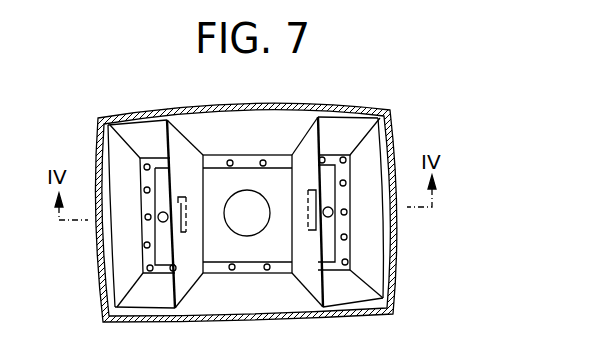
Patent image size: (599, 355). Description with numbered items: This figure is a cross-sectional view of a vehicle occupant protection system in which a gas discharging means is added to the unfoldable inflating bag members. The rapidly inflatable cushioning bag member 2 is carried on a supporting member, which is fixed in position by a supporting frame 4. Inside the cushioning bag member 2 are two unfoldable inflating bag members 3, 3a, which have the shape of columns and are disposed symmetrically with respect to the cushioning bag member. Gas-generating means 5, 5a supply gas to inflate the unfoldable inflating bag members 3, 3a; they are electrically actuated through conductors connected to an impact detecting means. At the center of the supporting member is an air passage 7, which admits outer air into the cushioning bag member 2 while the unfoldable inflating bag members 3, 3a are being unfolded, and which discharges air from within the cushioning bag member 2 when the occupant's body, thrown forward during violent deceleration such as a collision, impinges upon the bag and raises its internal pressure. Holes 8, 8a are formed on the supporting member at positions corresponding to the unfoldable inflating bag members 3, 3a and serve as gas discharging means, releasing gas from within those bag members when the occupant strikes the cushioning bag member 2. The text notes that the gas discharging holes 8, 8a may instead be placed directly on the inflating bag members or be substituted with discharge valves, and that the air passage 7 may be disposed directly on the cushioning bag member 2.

The rapidly inflatable cushioning bag member 2 is at (323, 100).
The unfoldable inflating bag member 3 is at (373, 255).
The unfoldable inflating bag member 3a is at (123, 259).
The supporting frame 4 is at (248, 160).
The gas-generating means 5 is at (333, 215).
The gas-generating means 5a is at (158, 217).
The air passage 7 is at (240, 225).
The gas discharging hole 8 is at (308, 200).
The gas discharging hole 8a is at (180, 200).